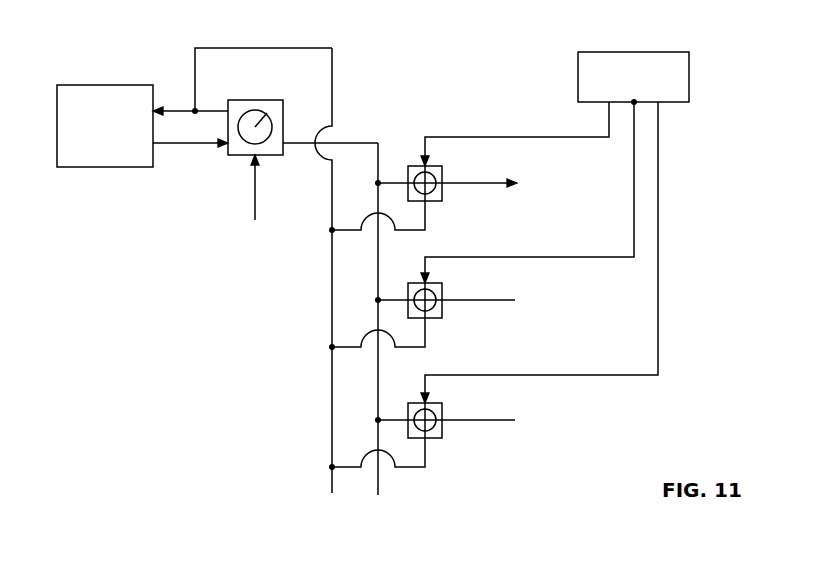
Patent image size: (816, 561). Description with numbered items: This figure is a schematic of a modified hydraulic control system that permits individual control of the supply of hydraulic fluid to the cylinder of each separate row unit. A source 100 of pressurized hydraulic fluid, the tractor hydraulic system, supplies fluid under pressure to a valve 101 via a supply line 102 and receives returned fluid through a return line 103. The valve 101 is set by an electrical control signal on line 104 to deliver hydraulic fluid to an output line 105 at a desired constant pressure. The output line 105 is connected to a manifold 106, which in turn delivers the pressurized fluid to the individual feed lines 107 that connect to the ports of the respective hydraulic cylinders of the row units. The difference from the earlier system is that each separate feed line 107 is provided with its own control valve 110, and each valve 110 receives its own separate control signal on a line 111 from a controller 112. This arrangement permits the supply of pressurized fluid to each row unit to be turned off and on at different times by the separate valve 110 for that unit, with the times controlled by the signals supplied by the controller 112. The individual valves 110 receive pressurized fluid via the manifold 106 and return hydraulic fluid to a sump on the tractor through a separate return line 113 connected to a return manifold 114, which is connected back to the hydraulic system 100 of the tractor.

The source of pressurized hydraulic fluid 100 is at (110, 84).
The valve 101 is at (257, 100).
The supply line 102 is at (173, 144).
The return line 103 is at (180, 109).
The line 104 is at (253, 190).
The output line 105 is at (348, 142).
The manifold 106 is at (375, 268).
The feed line 107 is at (485, 182).
The control valve 110 is at (440, 167).
The line 111 is at (493, 136).
The controller 112 is at (632, 51).
The return line 113 is at (427, 206).
The return manifold 114 is at (328, 407).